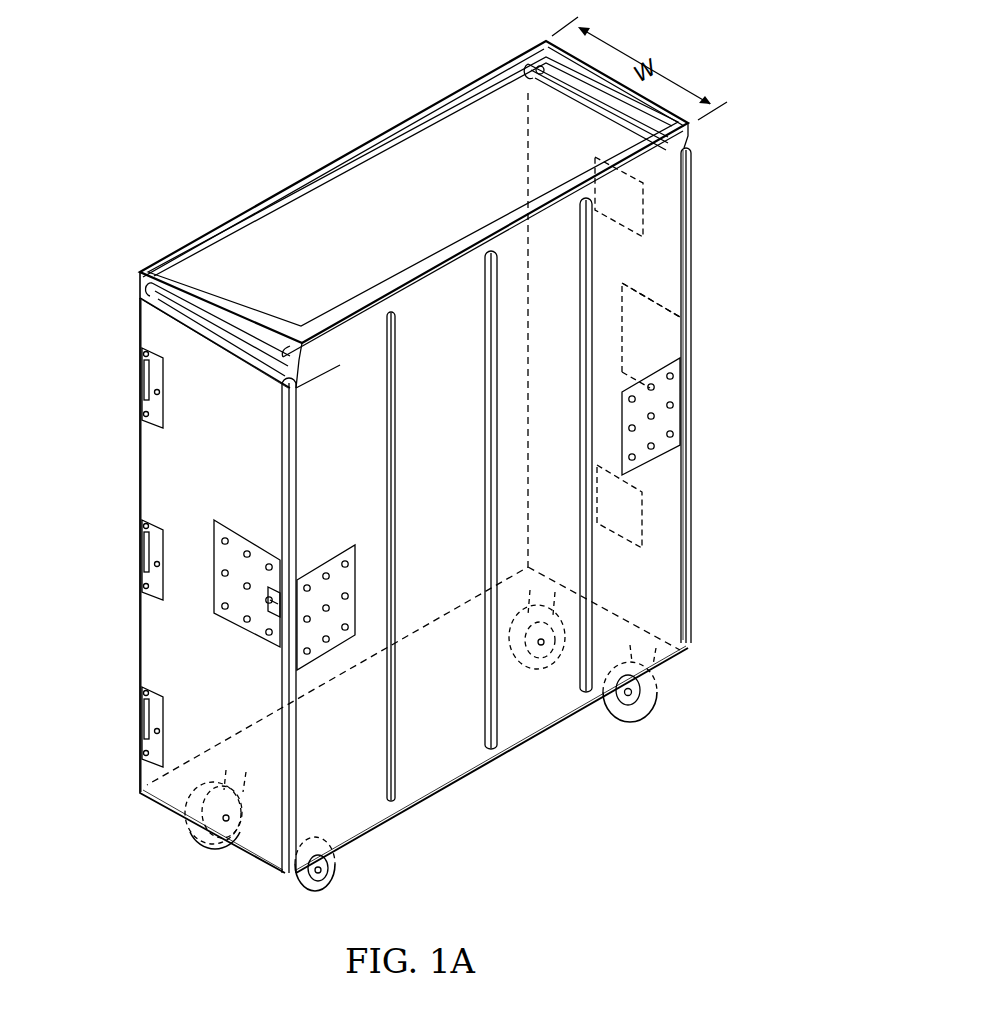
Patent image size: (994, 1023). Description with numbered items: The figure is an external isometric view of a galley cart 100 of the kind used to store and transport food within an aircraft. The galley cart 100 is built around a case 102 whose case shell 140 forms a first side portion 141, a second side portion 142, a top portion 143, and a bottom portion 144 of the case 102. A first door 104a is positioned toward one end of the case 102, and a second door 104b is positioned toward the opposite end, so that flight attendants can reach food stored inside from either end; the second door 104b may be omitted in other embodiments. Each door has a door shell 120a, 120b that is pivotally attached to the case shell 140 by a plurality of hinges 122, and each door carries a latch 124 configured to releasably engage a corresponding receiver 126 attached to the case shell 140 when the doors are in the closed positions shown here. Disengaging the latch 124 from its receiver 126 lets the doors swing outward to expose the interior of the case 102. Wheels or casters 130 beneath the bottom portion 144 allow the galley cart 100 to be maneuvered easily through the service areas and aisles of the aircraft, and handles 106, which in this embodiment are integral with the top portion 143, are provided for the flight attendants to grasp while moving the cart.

The galley cart 100 is at (250, 80).
The case 102 is at (455, 93).
The first door 104a is at (155, 455).
The second door 104b is at (660, 558).
The handles 106 is at (520, 62).
The door shell 120a is at (197, 478).
The door shell 120b is at (642, 248).
The hinges 122 is at (140, 372).
The latch 124 is at (240, 615).
The receivers 126 is at (333, 642).
The wheels or casters 130 is at (338, 878).
The case shell 140 is at (510, 712).
The first side portion 141 is at (342, 368).
The second side portion 142 is at (607, 288).
The top portion 143 is at (405, 195).
The bottom portion 144 is at (415, 752).